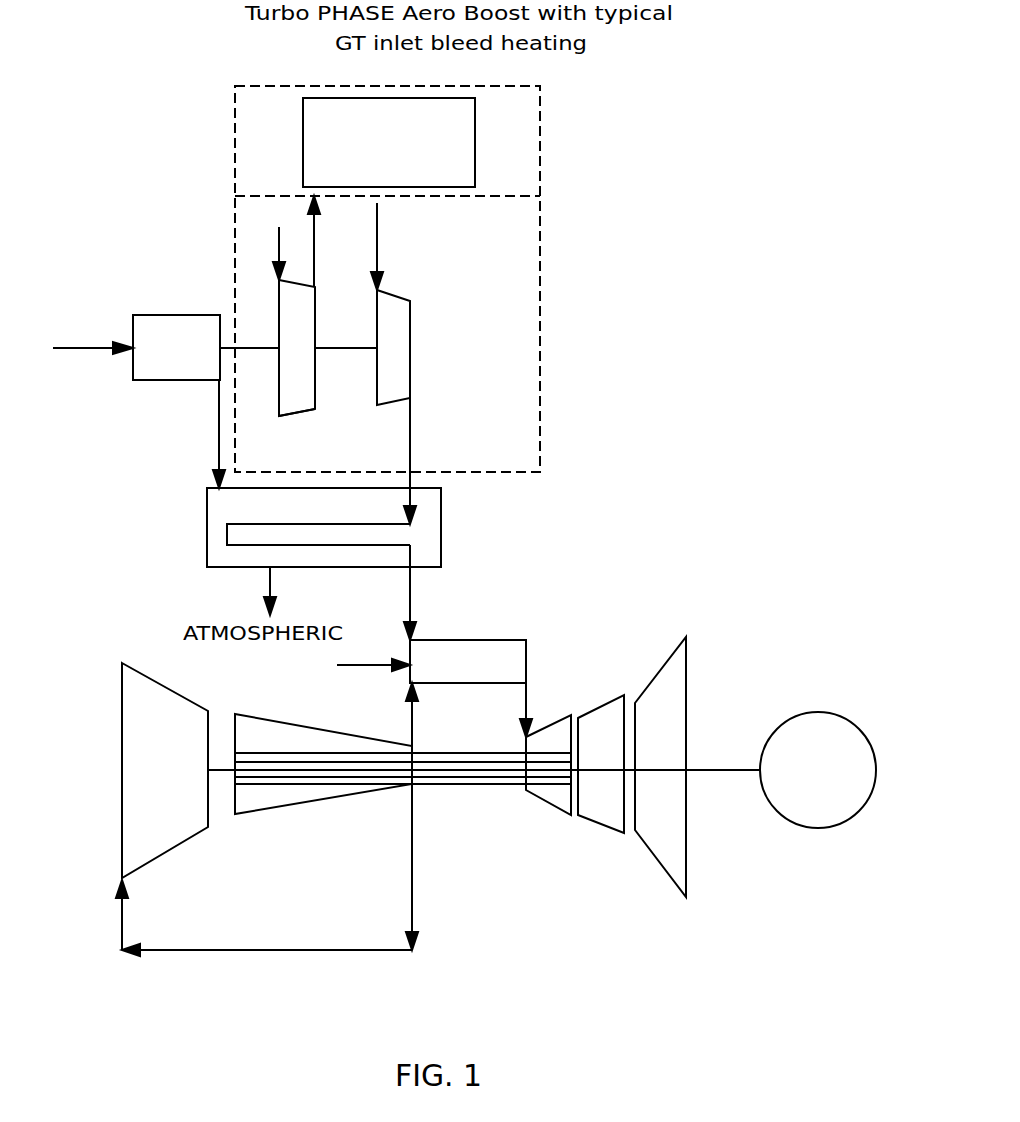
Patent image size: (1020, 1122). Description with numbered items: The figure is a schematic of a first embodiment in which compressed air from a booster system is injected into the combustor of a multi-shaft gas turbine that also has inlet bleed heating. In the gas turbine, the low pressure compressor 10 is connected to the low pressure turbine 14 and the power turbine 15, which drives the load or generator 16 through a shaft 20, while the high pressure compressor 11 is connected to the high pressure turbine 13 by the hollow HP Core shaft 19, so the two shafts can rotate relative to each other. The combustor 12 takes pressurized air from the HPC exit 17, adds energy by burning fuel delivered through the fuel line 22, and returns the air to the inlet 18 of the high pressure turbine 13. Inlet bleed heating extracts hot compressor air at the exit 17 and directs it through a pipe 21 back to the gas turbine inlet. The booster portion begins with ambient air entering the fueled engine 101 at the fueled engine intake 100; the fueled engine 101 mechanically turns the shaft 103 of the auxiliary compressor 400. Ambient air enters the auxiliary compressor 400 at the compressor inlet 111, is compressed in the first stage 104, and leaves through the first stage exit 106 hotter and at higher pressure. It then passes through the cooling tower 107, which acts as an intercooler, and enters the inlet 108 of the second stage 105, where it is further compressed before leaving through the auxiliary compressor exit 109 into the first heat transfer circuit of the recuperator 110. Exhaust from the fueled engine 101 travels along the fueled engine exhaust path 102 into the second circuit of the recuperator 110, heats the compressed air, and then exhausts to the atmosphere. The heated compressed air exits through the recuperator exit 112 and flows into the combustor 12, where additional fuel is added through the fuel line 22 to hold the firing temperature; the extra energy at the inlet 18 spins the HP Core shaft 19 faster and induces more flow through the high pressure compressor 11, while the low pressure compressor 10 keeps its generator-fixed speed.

The low pressure compressor 10 is at (183, 840).
The high pressure compressor 11 is at (275, 808).
The combustor 12 is at (468, 661).
The high pressure turbine 13 is at (537, 797).
The low pressure turbine 14 is at (598, 827).
The power turbine 15 is at (660, 865).
The load or generator 16 is at (818, 770).
The HPC exit 17 is at (412, 726).
The inlet of the HPT 18 is at (527, 695).
The HP Core shaft 19 is at (450, 750).
The shaft 20 is at (722, 770).
The pipe 21 is at (264, 918).
The fuel line 22 is at (348, 664).
The fueled engine intake 100 is at (87, 350).
The fueled engine 101 is at (147, 312).
The fueled engine exhaust path 102 is at (215, 407).
The shaft of the auxiliary compressor 103 is at (252, 345).
The first stage of the auxiliary compressor 104 is at (293, 412).
The second stage of the auxiliary compressor 105 is at (410, 327).
The first stage exit 106 is at (317, 222).
The cooling tower 107 is at (475, 110).
The inlet of the second stage 108 is at (378, 207).
The auxiliary compressor exit 109 is at (410, 425).
The recuperator 110 is at (442, 522).
The compressor inlet 111 is at (277, 235).
The recuperator exit 112 is at (411, 585).
The auxiliary compressor 400 is at (541, 232).